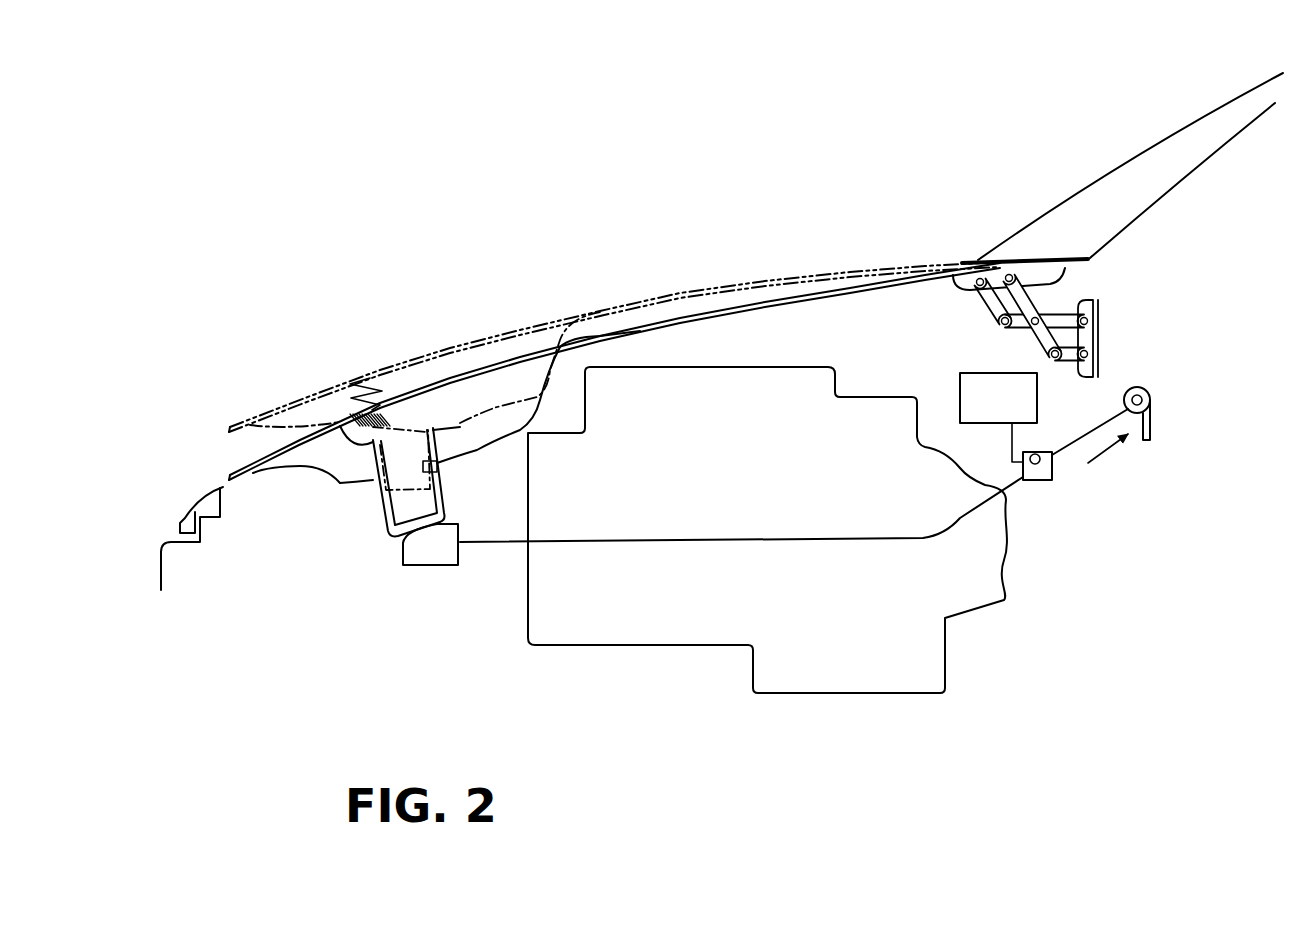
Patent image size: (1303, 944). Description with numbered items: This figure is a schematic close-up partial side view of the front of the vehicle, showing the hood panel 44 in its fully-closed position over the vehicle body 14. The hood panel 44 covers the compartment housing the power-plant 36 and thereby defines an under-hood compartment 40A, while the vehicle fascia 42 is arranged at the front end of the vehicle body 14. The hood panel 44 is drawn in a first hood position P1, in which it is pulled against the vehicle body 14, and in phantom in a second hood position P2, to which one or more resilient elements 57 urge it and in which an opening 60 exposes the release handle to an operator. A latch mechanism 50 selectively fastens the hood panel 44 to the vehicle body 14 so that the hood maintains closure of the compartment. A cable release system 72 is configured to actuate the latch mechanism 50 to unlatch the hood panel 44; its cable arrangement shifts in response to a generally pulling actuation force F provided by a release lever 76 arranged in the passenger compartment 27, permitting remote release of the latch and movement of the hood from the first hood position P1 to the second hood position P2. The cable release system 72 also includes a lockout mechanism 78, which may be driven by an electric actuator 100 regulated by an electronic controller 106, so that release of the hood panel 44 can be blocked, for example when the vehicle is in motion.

The vehicle body 14 is at (183, 518).
The passenger compartment 27 is at (1250, 263).
The power-plant 36 is at (721, 520).
The under-hood compartment 40A is at (515, 591).
The vehicle fascia 42 is at (152, 565).
The hood panel 44 is at (768, 300).
The latch mechanism 50 is at (413, 566).
The resilient element 57 is at (360, 368).
The opening 60 is at (236, 442).
The cable release system 72 is at (476, 268).
The release lever 76 is at (489, 478).
The lockout mechanism 78 is at (1036, 482).
The electric actuator 100 is at (1038, 455).
The electronic controller 106 is at (1016, 412).
The first hood position P1 is at (240, 443).
The second hood position P2 is at (288, 400).
The actuation force F is at (1130, 448).